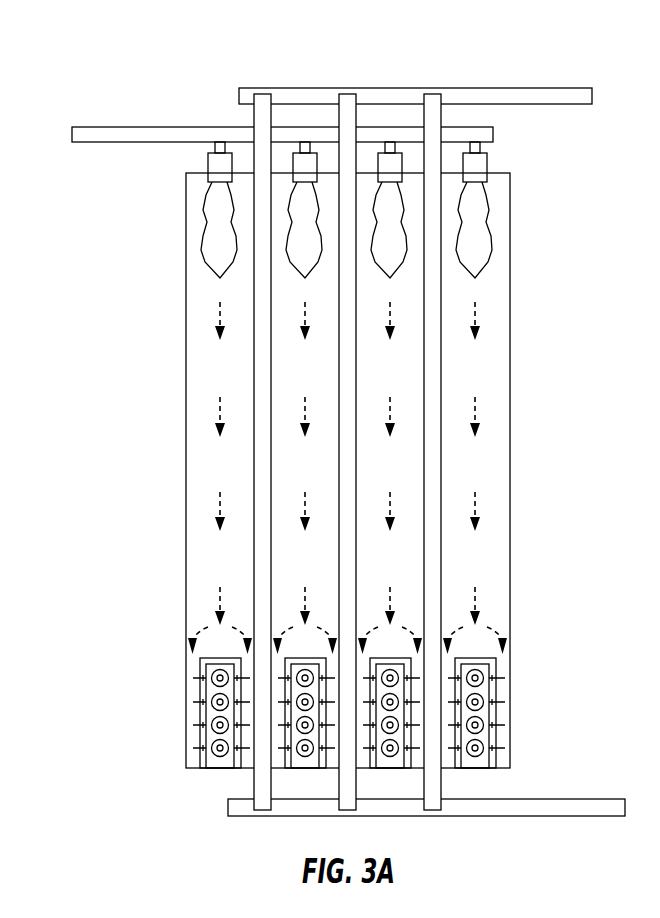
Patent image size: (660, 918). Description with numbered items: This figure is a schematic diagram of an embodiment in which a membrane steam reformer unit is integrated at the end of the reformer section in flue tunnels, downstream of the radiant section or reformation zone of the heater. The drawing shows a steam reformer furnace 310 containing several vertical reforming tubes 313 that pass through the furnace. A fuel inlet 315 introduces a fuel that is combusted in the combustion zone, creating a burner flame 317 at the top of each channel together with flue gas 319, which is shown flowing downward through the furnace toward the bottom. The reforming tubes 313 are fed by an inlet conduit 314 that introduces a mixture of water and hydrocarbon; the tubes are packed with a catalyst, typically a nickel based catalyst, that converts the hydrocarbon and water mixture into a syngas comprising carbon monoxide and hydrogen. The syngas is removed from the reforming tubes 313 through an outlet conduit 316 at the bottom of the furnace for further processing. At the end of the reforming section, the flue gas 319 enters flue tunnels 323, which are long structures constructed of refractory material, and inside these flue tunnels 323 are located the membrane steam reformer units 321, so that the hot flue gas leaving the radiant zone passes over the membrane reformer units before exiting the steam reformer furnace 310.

The steam reformer furnace 310 is at (185, 492).
The reforming tubes 313 is at (433, 460).
The inlet conduit 314 is at (559, 88).
The fuel inlet 315 is at (120, 127).
The outlet conduit 316 is at (588, 799).
The burner flame 317 is at (487, 230).
The flue gas 319 is at (492, 507).
The membrane steam reformer units 321 is at (203, 723).
The flue tunnels 323 is at (497, 666).